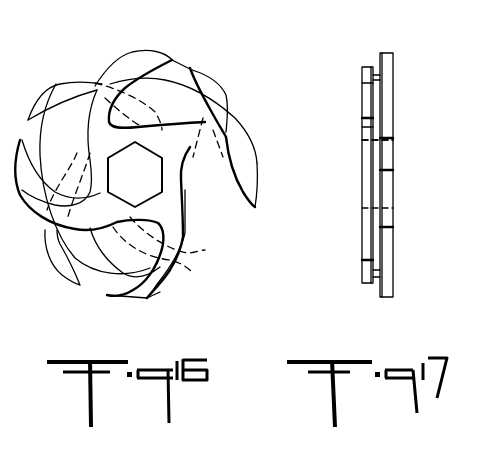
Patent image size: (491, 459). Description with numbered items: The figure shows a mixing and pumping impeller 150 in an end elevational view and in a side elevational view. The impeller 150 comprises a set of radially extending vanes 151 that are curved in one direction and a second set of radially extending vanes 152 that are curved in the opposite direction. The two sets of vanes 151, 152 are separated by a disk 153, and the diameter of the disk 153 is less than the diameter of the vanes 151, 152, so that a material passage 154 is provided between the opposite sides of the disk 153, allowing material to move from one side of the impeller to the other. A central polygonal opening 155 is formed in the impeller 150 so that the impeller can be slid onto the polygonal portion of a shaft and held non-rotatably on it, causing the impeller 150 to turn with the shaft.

In FIG. 16, the impeller 150 is at (157, 292).
In FIG. 17, the impeller 150 is at (383, 182).
In FIG. 16, the radially extending vanes 151 is at (235, 82).
In FIG. 17, the radially extending vanes 151 is at (367, 100).
In FIG. 16, the second set of radially extending vanes 152 is at (257, 163).
In FIG. 17, the second set of radially extending vanes 152 is at (387, 158).
In FIG. 16, the disk 153 is at (225, 125).
In FIG. 16, the material passage 154 is at (187, 78).
In FIG. 16, the central polygonal opening 155 is at (160, 154).
In FIG. 17, the central polygonal opening 155 is at (366, 140).